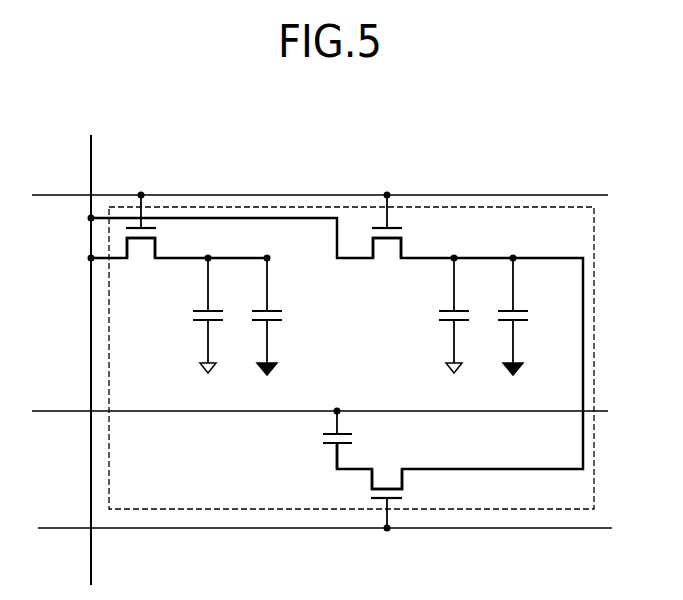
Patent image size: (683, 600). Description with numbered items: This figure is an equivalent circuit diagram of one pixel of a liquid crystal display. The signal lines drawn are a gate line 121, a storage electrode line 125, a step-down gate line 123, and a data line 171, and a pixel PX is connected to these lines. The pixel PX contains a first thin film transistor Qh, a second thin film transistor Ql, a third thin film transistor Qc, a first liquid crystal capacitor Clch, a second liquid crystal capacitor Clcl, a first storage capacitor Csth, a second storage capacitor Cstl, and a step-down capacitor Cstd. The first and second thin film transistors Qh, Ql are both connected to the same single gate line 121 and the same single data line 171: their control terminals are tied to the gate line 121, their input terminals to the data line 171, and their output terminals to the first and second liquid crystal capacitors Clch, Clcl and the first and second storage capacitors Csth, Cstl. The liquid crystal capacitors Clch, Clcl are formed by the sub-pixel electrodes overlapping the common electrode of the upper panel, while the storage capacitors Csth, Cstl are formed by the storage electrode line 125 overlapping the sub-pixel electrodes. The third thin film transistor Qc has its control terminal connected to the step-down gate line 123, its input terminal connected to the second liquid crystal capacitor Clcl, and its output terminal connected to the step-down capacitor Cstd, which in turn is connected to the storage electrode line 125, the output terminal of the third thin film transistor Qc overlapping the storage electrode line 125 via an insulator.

The data line 171 is at (90, 155).
The gate line 121 is at (339, 196).
The storage electrode line 125 is at (339, 412).
The step-down gate line 123 is at (345, 529).
The pixel PX is at (239, 207).
The first thin film transistor Qh is at (141, 239).
The second thin film transistor Ql is at (387, 239).
The third thin film transistor Qc is at (386, 488).
The first liquid crystal capacitor Clch is at (184, 315).
The first storage capacitor Csth is at (292, 316).
The second liquid crystal capacitor Clcl is at (433, 315).
The second storage capacitor Cstl is at (536, 316).
The step-down capacitor Cstd is at (312, 440).